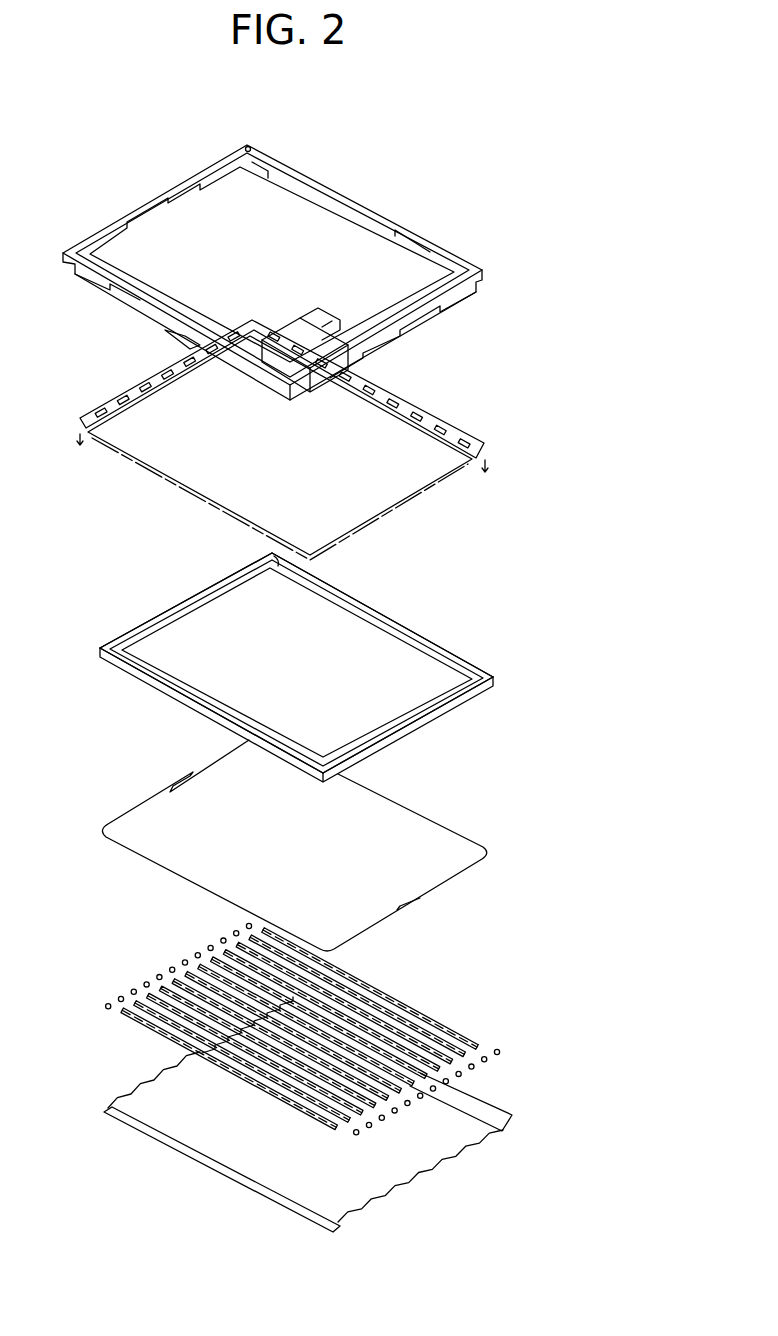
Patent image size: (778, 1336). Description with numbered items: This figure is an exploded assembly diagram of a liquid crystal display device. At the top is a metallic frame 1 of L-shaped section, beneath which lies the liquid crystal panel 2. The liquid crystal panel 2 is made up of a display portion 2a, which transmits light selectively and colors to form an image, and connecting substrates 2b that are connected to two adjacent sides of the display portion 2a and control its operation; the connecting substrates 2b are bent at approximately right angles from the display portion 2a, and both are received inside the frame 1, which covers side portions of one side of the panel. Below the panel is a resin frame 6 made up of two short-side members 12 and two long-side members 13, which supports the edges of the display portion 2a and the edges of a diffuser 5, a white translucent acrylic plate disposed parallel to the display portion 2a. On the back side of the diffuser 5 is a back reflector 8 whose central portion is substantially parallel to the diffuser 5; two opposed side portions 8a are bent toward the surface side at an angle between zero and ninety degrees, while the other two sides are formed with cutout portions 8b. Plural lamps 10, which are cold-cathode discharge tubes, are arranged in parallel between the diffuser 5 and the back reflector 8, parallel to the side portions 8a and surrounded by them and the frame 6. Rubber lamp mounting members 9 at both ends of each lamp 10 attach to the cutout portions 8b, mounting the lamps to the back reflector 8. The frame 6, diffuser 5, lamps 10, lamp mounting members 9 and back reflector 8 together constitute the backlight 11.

The metallic frame 1 is at (425, 247).
The liquid crystal panel 2 is at (344, 434).
The display portion 2a is at (432, 467).
The connecting substrates 2b is at (450, 428).
The diffuser 5 is at (458, 855).
The resin frame 6 is at (323, 663).
The back reflector 8 is at (327, 1142).
The side portions 8a is at (479, 1119).
The cutout portions 8b is at (455, 1157).
The lamp mounting members 9 is at (326, 1029).
The lamps 10 is at (410, 1008).
The backlight 11 is at (369, 888).
The short-side members 12 is at (157, 612).
The long-side members 13 is at (296, 663).